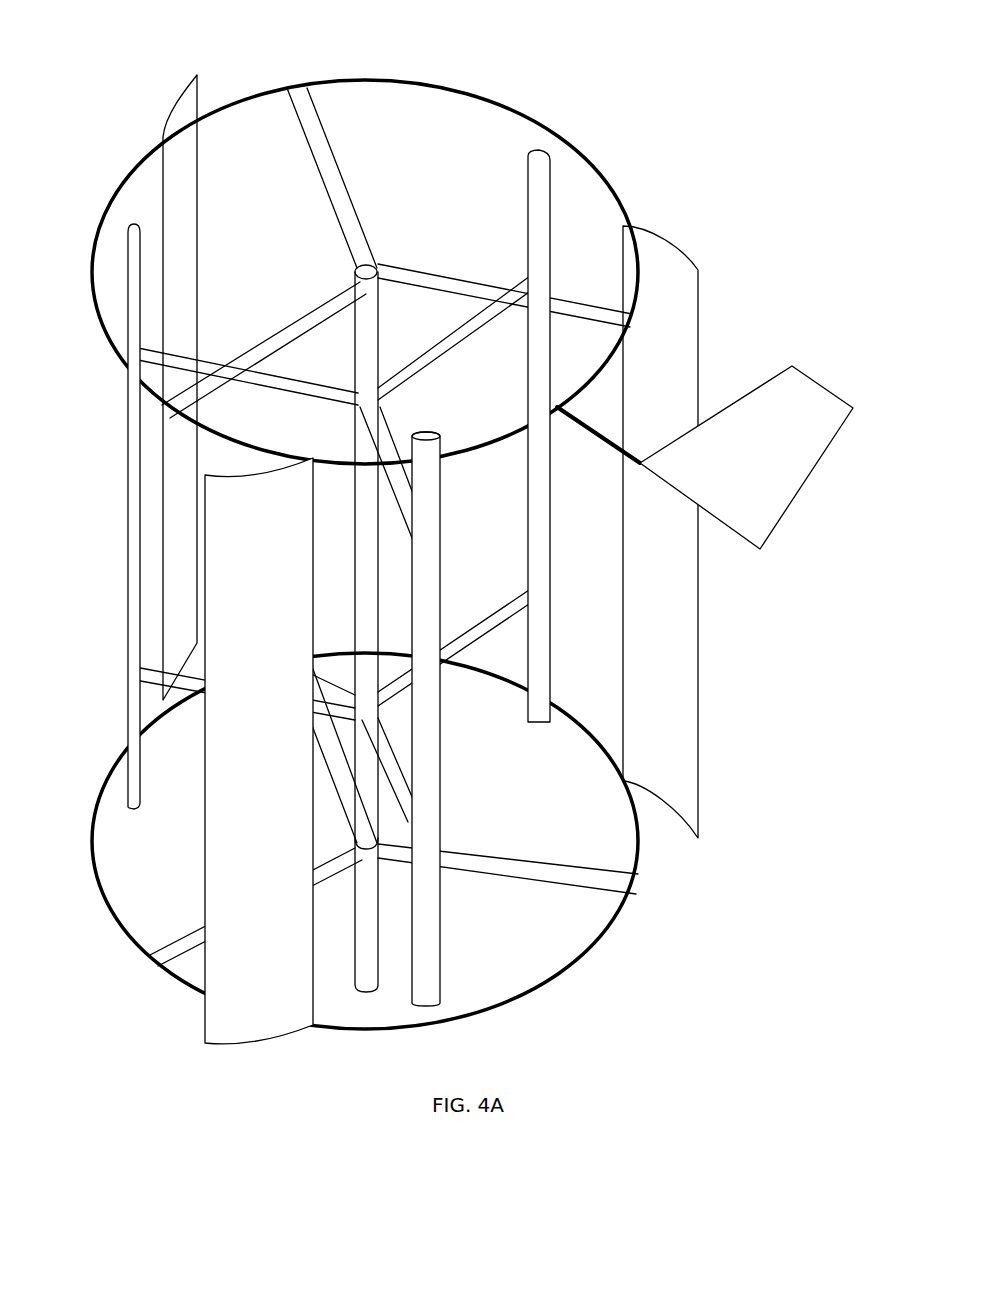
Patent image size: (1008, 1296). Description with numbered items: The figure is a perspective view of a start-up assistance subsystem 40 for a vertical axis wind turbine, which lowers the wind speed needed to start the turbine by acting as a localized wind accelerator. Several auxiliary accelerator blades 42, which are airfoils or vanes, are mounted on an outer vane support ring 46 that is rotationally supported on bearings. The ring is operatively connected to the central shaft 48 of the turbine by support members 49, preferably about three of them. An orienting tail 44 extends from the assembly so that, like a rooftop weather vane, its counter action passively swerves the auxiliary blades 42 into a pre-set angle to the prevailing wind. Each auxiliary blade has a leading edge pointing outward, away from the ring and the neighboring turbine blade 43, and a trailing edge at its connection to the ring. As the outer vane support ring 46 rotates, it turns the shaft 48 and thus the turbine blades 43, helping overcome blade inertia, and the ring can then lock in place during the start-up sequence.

The start-up assistance subsystem 40 is at (471, 580).
The auxiliary accelerator blade 42 is at (198, 90).
The turbine blade 43 is at (530, 193).
The orienting tail 44 is at (820, 462).
The outer vane support ring 46 is at (377, 82).
The central shaft 48 is at (358, 957).
The support member 49 is at (340, 178).